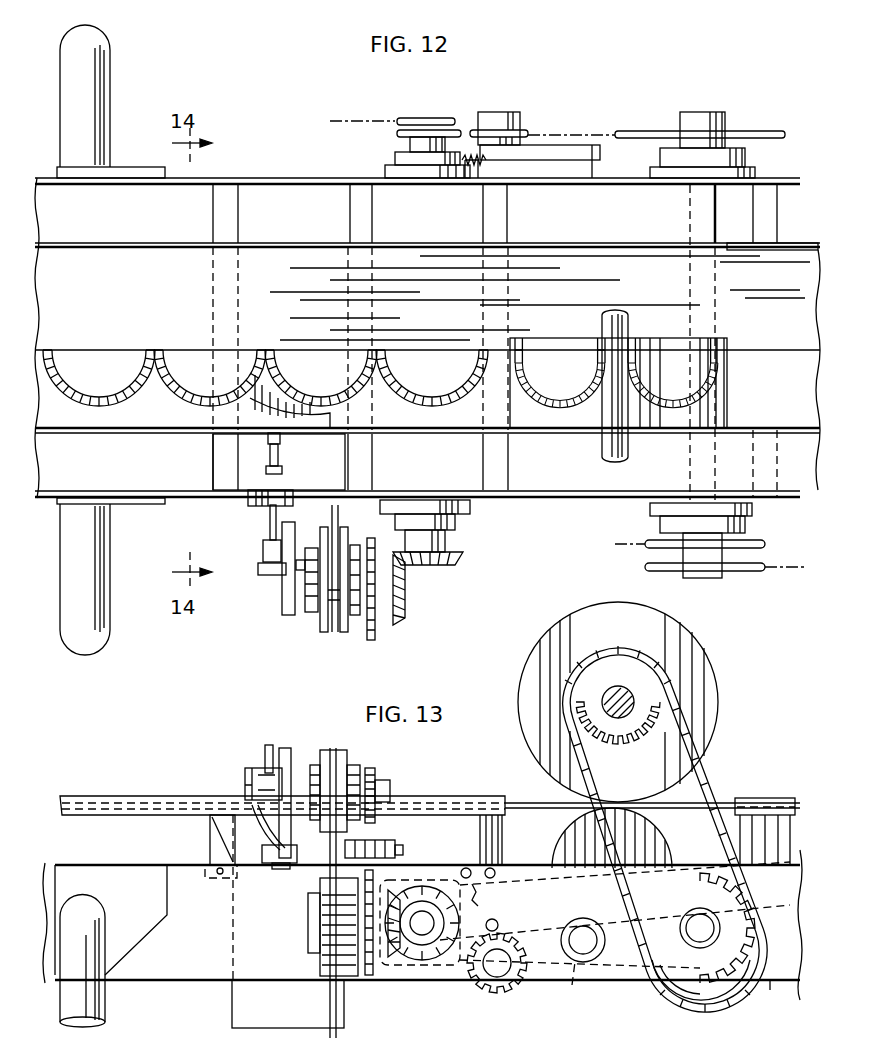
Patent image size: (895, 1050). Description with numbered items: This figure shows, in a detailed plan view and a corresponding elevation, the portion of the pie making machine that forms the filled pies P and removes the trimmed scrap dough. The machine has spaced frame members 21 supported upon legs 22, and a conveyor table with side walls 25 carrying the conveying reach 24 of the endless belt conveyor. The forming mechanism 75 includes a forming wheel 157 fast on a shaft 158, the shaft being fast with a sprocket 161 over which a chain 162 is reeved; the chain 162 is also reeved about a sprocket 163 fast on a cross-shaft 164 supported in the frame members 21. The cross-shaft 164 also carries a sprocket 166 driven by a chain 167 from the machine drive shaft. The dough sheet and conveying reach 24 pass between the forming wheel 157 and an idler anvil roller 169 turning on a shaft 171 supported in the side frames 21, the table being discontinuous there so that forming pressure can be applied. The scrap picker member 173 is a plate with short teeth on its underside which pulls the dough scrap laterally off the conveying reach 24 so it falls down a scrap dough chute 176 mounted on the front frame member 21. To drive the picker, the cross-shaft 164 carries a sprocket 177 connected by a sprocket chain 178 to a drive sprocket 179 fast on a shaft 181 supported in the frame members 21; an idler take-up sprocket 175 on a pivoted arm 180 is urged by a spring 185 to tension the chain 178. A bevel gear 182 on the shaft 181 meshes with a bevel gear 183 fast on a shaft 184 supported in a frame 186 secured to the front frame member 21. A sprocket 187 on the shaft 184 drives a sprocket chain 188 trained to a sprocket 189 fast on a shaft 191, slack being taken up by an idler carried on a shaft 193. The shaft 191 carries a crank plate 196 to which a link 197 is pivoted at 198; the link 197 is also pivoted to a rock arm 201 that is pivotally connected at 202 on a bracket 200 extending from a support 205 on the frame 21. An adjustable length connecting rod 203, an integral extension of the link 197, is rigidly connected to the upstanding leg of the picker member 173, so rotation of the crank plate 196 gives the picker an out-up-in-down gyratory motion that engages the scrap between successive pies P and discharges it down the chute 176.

In FIG. 12, the frame members 21 is at (304, 178).
In FIG. 13, the frame members 21 is at (455, 980).
In FIG. 12, the legs 22 is at (104, 112).
In FIG. 13, the legs 22 is at (103, 1010).
In FIG. 13, the conveying reach 24 is at (522, 808).
In FIG. 13, the side walls 25 is at (484, 800).
In FIG. 13, the forming mechanism 75 is at (728, 669).
In FIG. 12, the pie P is at (195, 358).
In FIG. 12, the forming wheel 157 is at (570, 338).
In FIG. 13, the forming wheel 157 is at (698, 650).
In FIG. 12, the shaft 158 is at (628, 318).
In FIG. 13, the shaft 158 is at (628, 712).
In FIG. 13, the sprocket 161 is at (636, 760).
In FIG. 13, the chain 162 is at (688, 783).
In FIG. 12, the sprocket 163 is at (765, 545).
In FIG. 13, the sprocket 163 is at (672, 992).
In FIG. 12, the cross-shaft 164 is at (705, 112).
In FIG. 13, the cross-shaft 164 is at (704, 940).
In FIG. 12, the sprocket 166 is at (735, 571).
In FIG. 13, the sprocket 166 is at (758, 925).
In FIG. 12, the chain 167 is at (785, 568).
In FIG. 13, the chain 167 is at (770, 985).
In FIG. 13, the idler anvil roller 169 is at (652, 838).
In FIG. 13, the shaft 171 is at (572, 902).
In FIG. 12, the picker member 173 is at (312, 396).
In FIG. 12, the idler take-up sprocket 175 is at (522, 130).
In FIG. 13, the idler take-up sprocket 175 is at (500, 994).
In FIG. 12, the scrap dough chute 176 is at (332, 458).
In FIG. 13, the scrap dough chute 176 is at (234, 995).
In FIG. 12, the sprocket 177 is at (742, 131).
In FIG. 13, the sprocket 177 is at (642, 988).
In FIG. 12, the sprocket chain 178 is at (592, 134).
In FIG. 13, the sprocket chain 178 is at (574, 990).
In FIG. 12, the drive sprocket 179 is at (428, 120).
In FIG. 12, the arm 180 is at (528, 162).
In FIG. 13, the arm 180 is at (570, 960).
In FIG. 12, the shaft 181 is at (396, 155).
In FIG. 13, the shaft 181 is at (421, 936).
In FIG. 12, the bevel gear 182 is at (458, 566).
In FIG. 13, the bevel gear 182 is at (420, 888).
In FIG. 12, the bevel gear 183 is at (400, 620).
In FIG. 13, the bevel gear 183 is at (393, 957).
In FIG. 12, the shaft 184 is at (345, 632).
In FIG. 13, the shaft 184 is at (308, 920).
In FIG. 12, the spring 185 is at (486, 164).
In FIG. 13, the spring 185 is at (492, 912).
In FIG. 12, the frame 186 is at (335, 632).
In FIG. 13, the frame 186 is at (333, 1030).
In FIG. 12, the sprocket 187 is at (375, 640).
In FIG. 13, the sprocket 187 is at (370, 976).
In FIG. 13, the sprocket chain 188 is at (365, 828).
In FIG. 13, the sprocket 189 is at (375, 775).
In FIG. 13, the shaft 191 is at (390, 790).
In FIG. 13, the shaft 193 is at (403, 850).
In FIG. 13, the crank plate 196 is at (288, 752).
In FIG. 12, the link 197 is at (263, 548).
In FIG. 13, the link 197 is at (269, 745).
In FIG. 13, the pivot 198 is at (252, 768).
In FIG. 13, the bracket 200 is at (282, 863).
In FIG. 12, the rock arm 201 is at (278, 492).
In FIG. 13, the rock arm 201 is at (262, 828).
In FIG. 13, the pivot 202 is at (295, 868).
In FIG. 12, the connecting rod 203 is at (280, 440).
In FIG. 13, the support 205 is at (258, 873).